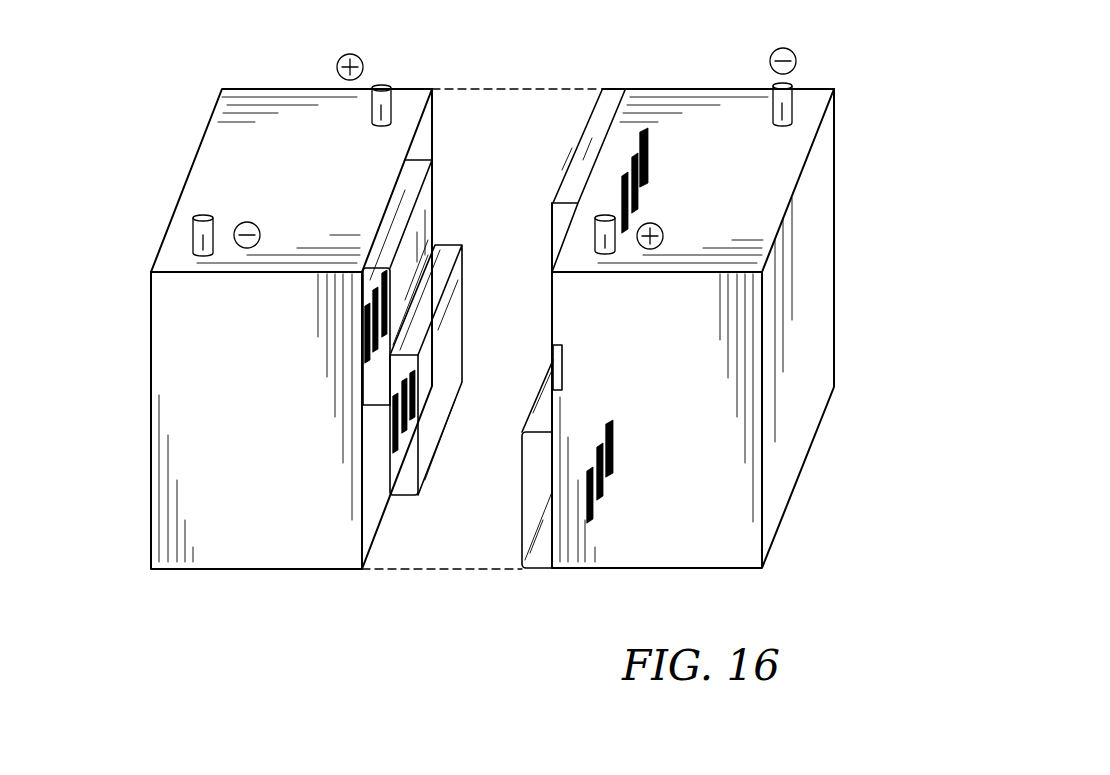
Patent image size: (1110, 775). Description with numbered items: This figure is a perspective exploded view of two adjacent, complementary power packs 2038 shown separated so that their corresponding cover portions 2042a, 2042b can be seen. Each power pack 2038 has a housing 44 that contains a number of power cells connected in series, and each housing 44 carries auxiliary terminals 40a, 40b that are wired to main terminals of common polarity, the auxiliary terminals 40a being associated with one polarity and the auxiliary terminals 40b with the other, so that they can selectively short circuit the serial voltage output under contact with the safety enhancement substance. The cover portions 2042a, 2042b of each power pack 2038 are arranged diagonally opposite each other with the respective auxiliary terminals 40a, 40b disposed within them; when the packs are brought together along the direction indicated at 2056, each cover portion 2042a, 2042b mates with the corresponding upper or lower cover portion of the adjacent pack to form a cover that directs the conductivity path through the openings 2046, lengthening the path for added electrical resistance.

The power pack 2038 is at (172, 112).
The housing 44 is at (150, 377).
The cover portion 2042b is at (415, 160).
The cover portion 2042a is at (452, 245).
The auxiliary terminal 40b is at (337, 342).
The auxiliary terminal 40a is at (364, 428).
The opening 2046 is at (543, 562).
The mating direction 2056 is at (418, 598).